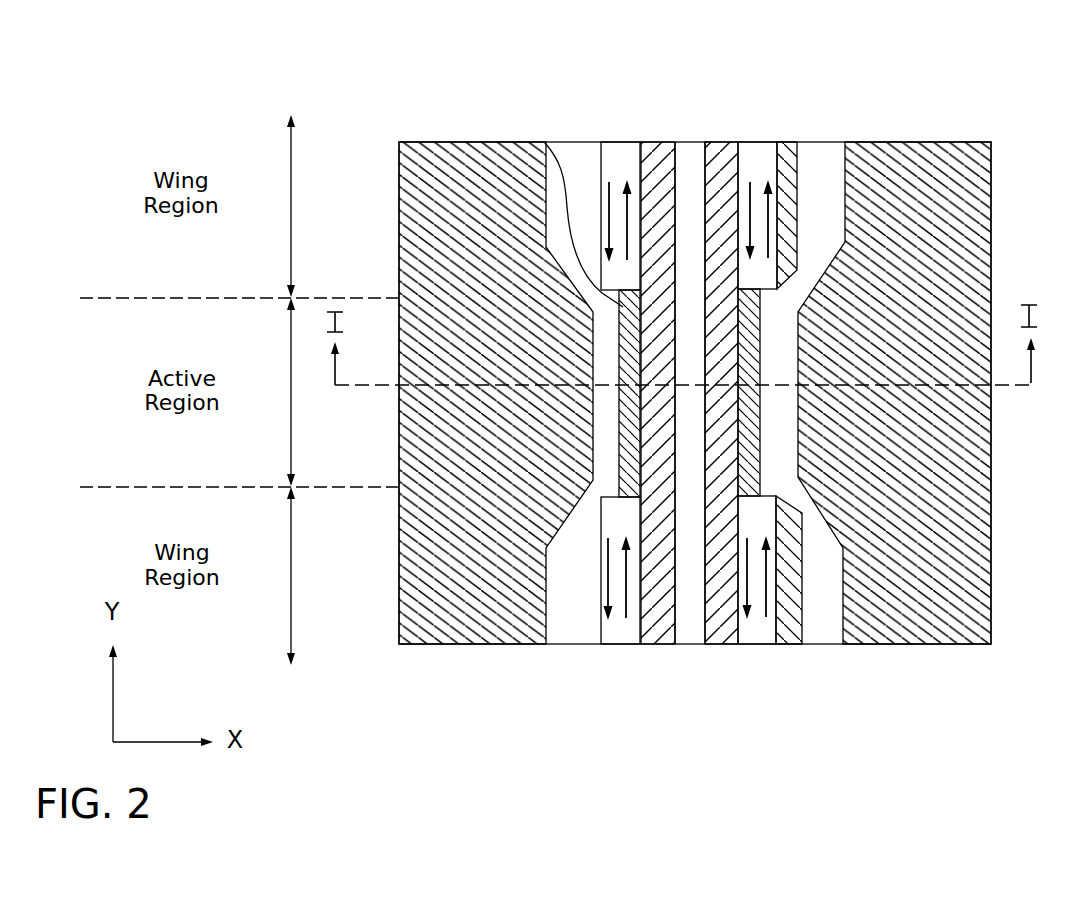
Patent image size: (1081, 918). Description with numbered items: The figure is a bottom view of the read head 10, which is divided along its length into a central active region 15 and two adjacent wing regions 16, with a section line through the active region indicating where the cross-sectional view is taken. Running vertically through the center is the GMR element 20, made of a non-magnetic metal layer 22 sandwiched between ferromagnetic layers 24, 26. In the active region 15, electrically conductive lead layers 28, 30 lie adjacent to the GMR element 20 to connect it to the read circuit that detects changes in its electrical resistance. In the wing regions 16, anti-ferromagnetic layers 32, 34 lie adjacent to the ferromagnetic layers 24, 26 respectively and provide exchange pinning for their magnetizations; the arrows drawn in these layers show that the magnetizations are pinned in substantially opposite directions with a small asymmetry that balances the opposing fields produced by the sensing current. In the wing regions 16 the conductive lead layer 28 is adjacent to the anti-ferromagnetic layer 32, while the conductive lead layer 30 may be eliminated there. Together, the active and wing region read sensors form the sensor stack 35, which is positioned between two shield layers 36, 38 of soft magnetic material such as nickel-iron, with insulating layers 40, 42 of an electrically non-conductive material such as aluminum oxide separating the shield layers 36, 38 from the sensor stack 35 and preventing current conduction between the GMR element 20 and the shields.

The read head 10 is at (933, 93).
The active region 15 is at (398, 452).
The wing regions 16 is at (398, 243).
The GMR element 20 is at (752, 132).
The non-magnetic metal layer 22 is at (692, 647).
The ferromagnetic layer 24 is at (731, 656).
The ferromagnetic layer 26 is at (652, 660).
The electrically conductive lead layer 28 is at (795, 173).
The electrically conductive lead layer 30 is at (545, 143).
The anti-ferromagnetic layer 32 is at (760, 142).
The anti-ferromagnetic layer 34 is at (615, 143).
The sensor stack 35 is at (537, 723).
The shield layer 36 is at (991, 470).
The shield layer 38 is at (483, 632).
The insulating layer 40 is at (825, 645).
The insulating layer 42 is at (567, 645).